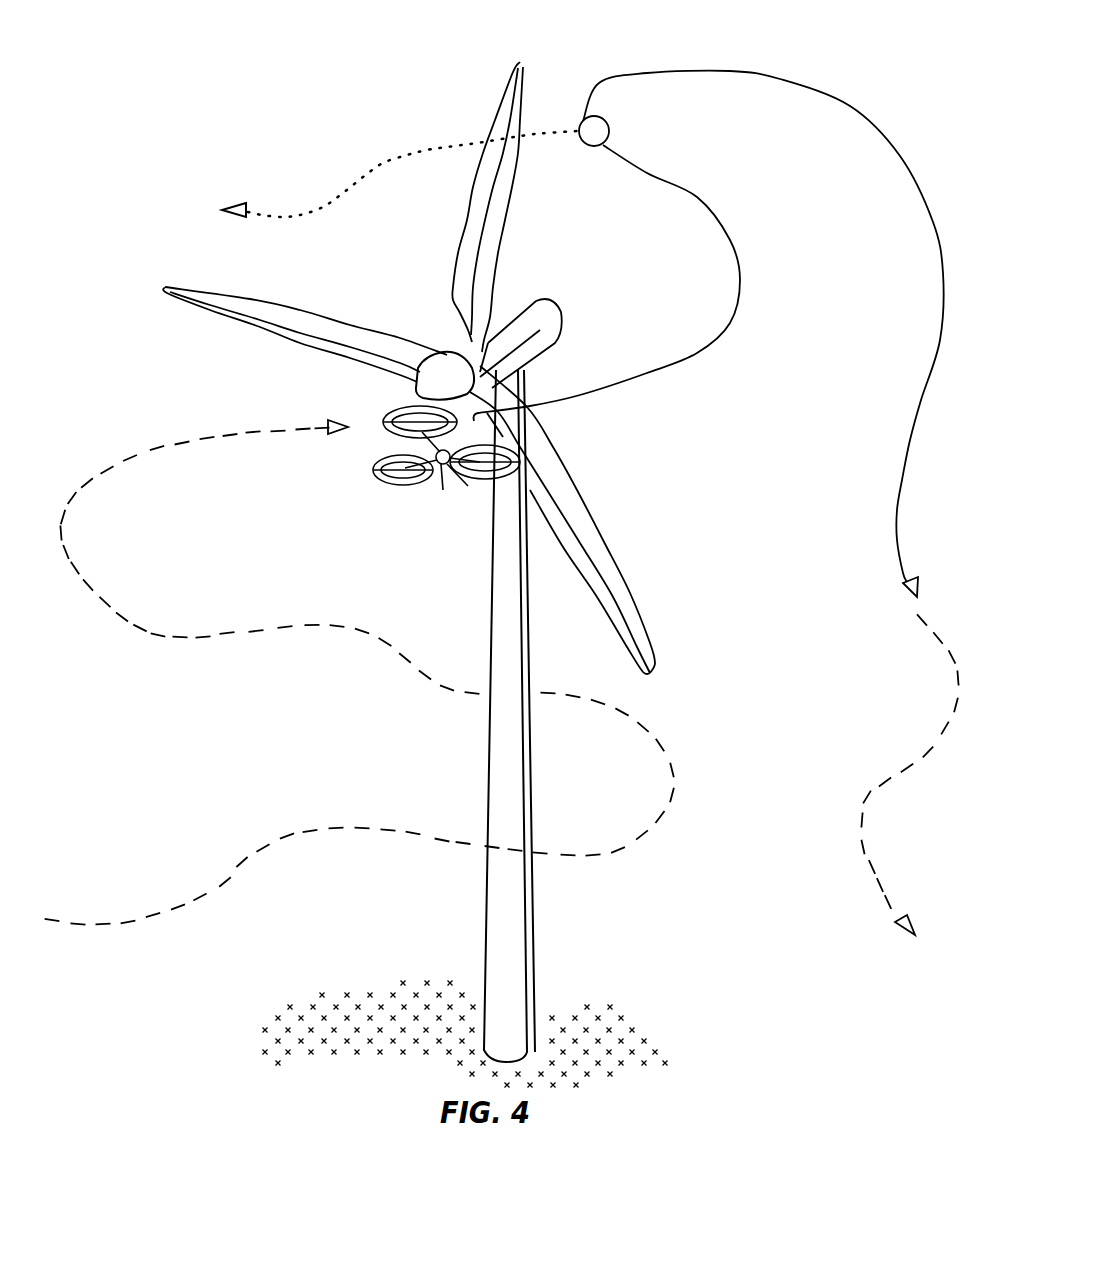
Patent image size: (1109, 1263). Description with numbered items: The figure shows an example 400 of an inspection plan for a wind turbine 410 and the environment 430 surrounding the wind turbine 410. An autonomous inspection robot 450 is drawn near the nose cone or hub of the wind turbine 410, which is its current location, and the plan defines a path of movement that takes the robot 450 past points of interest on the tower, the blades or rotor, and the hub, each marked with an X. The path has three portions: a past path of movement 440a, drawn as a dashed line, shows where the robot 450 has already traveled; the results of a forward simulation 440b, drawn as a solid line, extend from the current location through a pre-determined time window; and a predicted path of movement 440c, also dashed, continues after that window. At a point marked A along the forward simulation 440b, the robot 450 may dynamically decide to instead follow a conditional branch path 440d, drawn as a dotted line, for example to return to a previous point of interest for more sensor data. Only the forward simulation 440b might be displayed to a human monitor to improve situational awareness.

The example of an inspection plan 400 is at (262, 158).
The wind turbine 410 is at (521, 62).
The environment 430 is at (607, 1008).
The autonomous inspection robot 450 is at (402, 487).
The past path of movement 440a is at (198, 634).
The results of a forward simulation 440b is at (787, 80).
The predicted path of movement 440c is at (863, 841).
The conditional branch path 440d is at (407, 155).